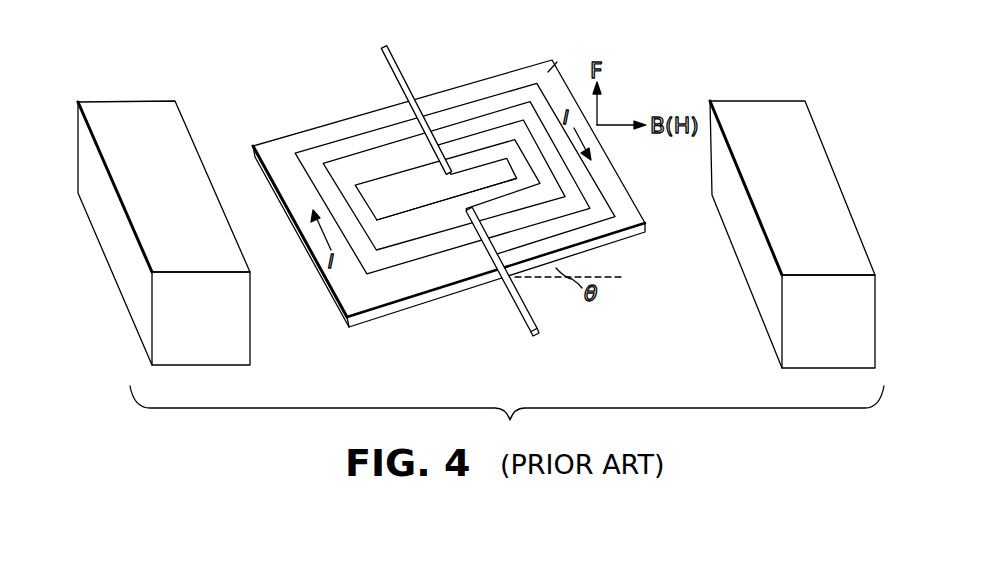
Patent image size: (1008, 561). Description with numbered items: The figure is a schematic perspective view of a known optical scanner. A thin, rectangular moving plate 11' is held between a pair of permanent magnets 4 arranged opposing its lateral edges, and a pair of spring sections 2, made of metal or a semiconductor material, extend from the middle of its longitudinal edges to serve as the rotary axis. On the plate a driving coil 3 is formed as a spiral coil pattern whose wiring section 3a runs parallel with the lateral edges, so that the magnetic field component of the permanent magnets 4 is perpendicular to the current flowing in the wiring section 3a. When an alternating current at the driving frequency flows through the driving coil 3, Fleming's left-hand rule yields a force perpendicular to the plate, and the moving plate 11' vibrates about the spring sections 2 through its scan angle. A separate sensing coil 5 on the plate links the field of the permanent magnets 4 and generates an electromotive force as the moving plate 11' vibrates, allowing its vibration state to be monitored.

The spring section 2 is at (382, 54).
The driving coil 3 is at (472, 98).
The wiring section 3a is at (548, 90).
The permanent magnet 4 is at (157, 101).
The sensing coil 5 is at (417, 210).
The moving plate 11' is at (449, 193).